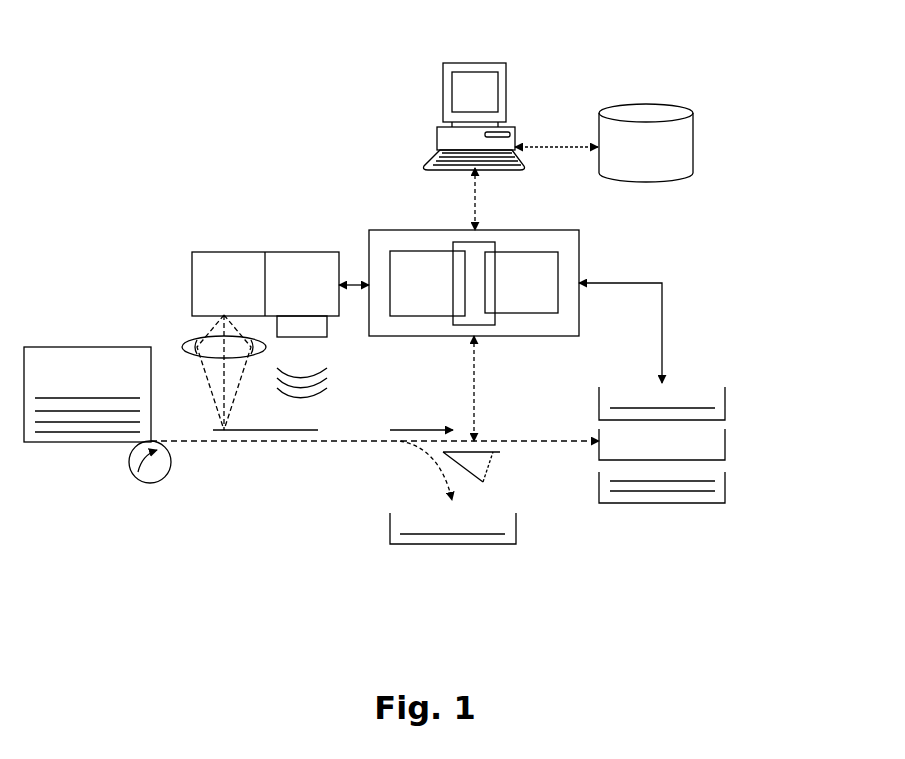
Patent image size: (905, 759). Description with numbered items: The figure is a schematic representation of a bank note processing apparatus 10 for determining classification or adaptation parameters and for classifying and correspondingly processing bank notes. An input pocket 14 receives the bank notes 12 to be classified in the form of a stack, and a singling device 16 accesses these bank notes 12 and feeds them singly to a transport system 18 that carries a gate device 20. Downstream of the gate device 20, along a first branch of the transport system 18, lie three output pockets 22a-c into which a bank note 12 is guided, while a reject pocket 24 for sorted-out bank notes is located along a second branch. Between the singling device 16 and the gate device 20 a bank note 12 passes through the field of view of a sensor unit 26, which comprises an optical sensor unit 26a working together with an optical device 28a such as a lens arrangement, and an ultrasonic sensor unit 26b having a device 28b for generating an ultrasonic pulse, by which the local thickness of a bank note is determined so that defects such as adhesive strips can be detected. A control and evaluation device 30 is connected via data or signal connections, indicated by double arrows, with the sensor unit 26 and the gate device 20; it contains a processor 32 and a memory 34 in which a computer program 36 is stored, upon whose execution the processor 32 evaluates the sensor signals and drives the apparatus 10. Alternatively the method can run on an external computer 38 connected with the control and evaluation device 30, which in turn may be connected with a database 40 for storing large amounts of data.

The bank note processing apparatus 10 is at (172, 150).
The bank notes 12 is at (108, 398).
The input pocket 14 is at (100, 347).
The singling device 16 is at (148, 483).
The transport system 18 is at (295, 445).
The gate device 20 is at (495, 452).
The output pockets 22a-c is at (725, 408).
The reject pocket 24 is at (493, 544).
The sensor unit 26 is at (192, 265).
The optical sensor unit 26a is at (239, 284).
The ultrasonic sensor unit 26b is at (324, 285).
The optical device 28a is at (182, 348).
The device for generating an ultrasonic pulse 28b is at (330, 325).
The control and evaluation device 30 is at (369, 240).
The processor 32 is at (427, 283).
The memory 34 is at (521, 282).
The computer program 36 is at (487, 238).
The external computer 38 is at (440, 128).
The database 40 is at (646, 143).